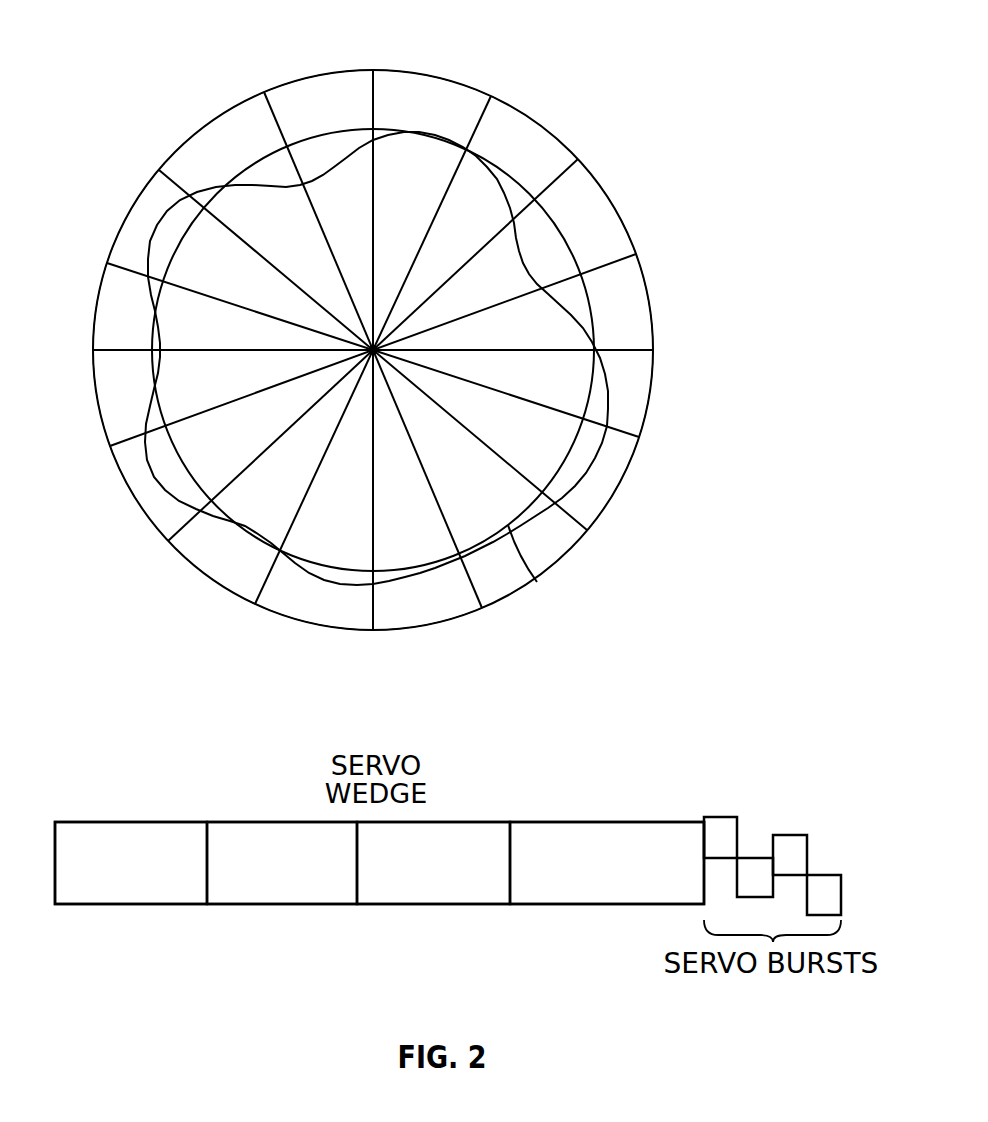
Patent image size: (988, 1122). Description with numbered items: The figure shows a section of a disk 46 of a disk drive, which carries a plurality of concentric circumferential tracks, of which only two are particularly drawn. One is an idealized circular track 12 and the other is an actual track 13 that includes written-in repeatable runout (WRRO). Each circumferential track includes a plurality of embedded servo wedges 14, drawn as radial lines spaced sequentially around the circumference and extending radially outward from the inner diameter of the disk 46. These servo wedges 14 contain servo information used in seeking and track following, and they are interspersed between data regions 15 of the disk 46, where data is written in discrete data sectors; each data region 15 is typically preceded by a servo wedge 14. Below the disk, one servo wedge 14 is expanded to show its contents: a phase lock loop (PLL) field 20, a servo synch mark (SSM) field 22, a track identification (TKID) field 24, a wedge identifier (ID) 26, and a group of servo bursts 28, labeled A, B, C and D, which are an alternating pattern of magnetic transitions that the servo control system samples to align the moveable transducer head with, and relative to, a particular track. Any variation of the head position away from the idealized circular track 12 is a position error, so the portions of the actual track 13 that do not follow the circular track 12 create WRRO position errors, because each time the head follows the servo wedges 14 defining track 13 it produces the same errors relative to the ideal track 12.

The disk 46 is at (188, 42).
The idealized track 12 is at (555, 222).
The actual track 13 is at (442, 133).
The servo wedges 14 is at (543, 493).
The data regions 15 is at (537, 582).
The phase lock loop (PLL) field 20 is at (83, 905).
The servo synch mark (SSM) field 22 is at (235, 905).
The track identification (TKID) field 24 is at (383, 905).
The wedge identifier (ID) 26 is at (543, 905).
The group of servo bursts 28 is at (707, 803).